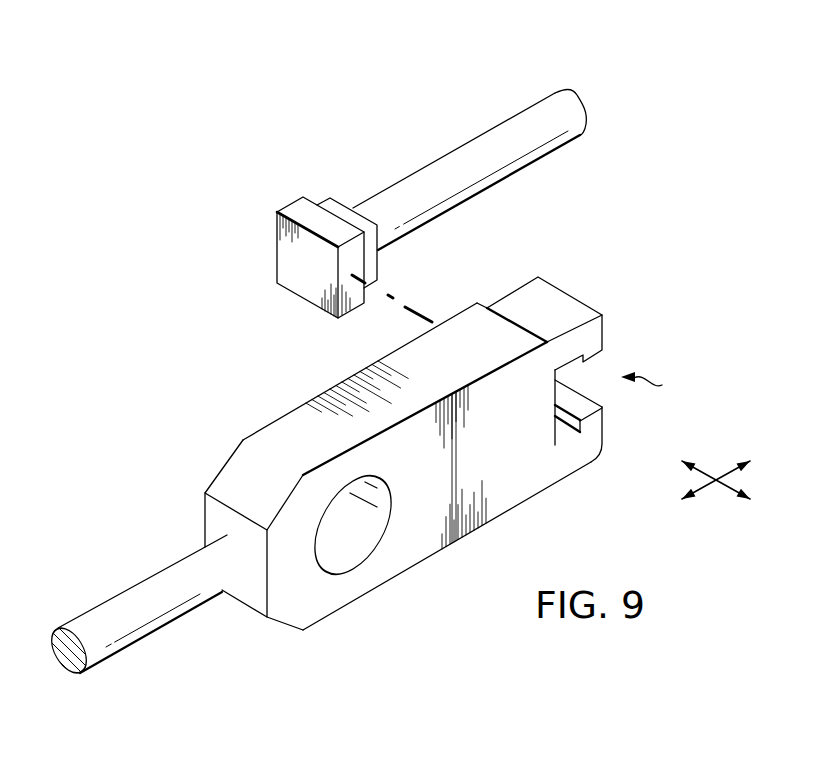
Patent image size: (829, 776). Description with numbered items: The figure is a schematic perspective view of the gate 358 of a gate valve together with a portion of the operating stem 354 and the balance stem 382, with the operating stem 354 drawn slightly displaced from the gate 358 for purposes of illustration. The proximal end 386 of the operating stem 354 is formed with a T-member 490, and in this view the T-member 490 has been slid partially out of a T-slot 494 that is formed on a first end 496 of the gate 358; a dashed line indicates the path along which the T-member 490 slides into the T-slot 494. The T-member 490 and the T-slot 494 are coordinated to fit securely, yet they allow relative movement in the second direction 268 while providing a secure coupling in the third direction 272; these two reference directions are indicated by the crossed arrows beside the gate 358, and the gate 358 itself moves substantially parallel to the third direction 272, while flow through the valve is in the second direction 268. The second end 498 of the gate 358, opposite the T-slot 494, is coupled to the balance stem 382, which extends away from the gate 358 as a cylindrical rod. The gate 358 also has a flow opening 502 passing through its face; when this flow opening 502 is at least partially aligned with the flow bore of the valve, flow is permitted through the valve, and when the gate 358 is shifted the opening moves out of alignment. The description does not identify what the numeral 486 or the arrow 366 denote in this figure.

The operating stem 354 is at (468, 155).
The mounting plate 486 is at (304, 217).
The T-member 490 is at (347, 243).
The proximal end 386 is at (303, 288).
The gate 358 is at (513, 505).
The second end 498 is at (210, 510).
The first end 496 is at (603, 317).
The T-slot 494 is at (572, 438).
The flow opening 502 is at (358, 550).
The balance stem 382 is at (141, 590).
The direction arrow 366 is at (664, 384).
The third direction 272 is at (728, 467).
The second direction 268 is at (731, 487).